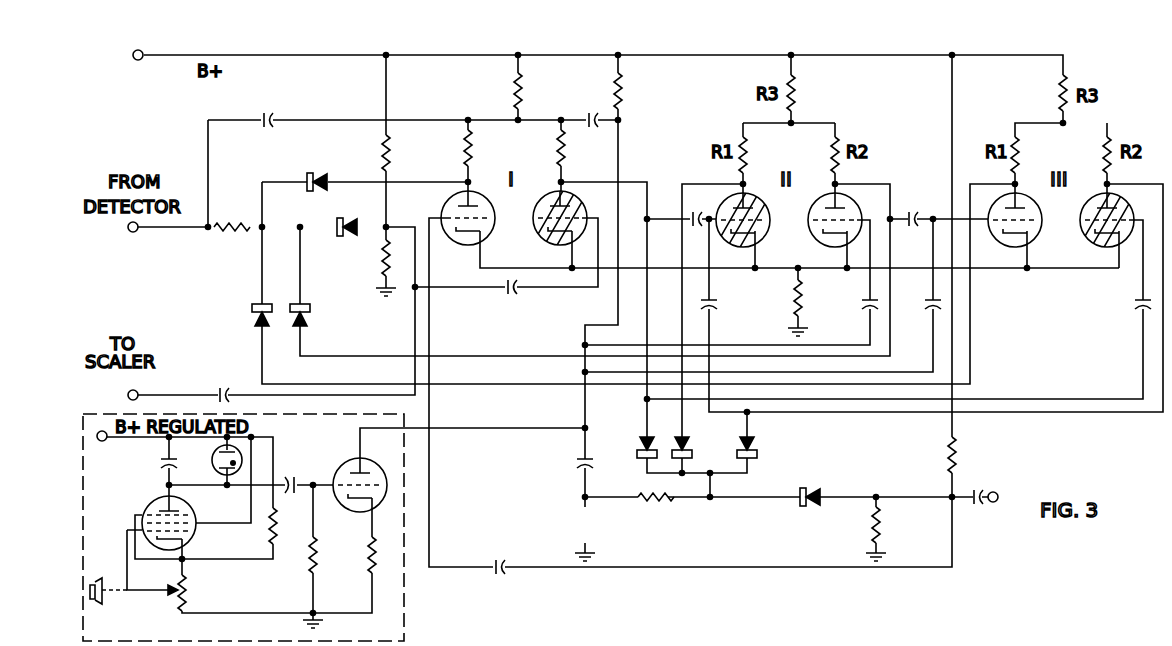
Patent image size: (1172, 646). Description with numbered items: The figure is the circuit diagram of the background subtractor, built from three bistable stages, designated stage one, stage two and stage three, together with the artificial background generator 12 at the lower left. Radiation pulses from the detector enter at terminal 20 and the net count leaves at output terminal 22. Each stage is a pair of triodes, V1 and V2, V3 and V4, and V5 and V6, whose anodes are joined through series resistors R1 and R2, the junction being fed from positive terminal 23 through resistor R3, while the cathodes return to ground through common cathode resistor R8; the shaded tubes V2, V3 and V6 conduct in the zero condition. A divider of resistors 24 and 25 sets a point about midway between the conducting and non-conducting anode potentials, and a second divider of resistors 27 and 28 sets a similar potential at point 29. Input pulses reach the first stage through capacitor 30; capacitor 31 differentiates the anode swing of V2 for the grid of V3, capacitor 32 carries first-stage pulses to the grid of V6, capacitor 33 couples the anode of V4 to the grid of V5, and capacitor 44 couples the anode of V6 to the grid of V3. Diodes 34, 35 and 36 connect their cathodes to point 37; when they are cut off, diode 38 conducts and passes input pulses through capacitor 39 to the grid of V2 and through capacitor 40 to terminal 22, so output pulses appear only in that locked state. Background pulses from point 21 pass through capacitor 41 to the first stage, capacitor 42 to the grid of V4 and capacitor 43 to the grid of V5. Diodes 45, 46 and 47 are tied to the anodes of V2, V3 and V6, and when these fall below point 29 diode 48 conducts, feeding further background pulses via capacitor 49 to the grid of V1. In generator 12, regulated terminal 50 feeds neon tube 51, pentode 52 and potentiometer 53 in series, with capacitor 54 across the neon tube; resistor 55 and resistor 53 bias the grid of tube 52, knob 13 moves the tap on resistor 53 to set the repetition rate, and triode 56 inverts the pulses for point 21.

The artificial background generator 12 is at (404, 611).
The knob 13 is at (100, 600).
The input terminal 20 is at (140, 230).
The background pulse point 21 is at (583, 427).
The output terminal 22 is at (140, 392).
The positive potential terminal 23 is at (142, 62).
The resistor 24 is at (389, 148).
The resistor 25 is at (384, 265).
The resistor 27 is at (950, 452).
The resistor 28 is at (880, 522).
The point 29 is at (950, 495).
The capacitor 30 is at (274, 115).
The capacitor 31 is at (690, 217).
The capacitor 32 is at (1139, 309).
The capacitor 33 is at (910, 217).
The diode 34 is at (324, 173).
The diode 35 is at (308, 309).
The diode 36 is at (252, 309).
The point 37 is at (262, 225).
The diode 38 is at (344, 222).
The capacitor 39 is at (516, 293).
The capacitor 40 is at (219, 392).
The capacitor 41 is at (589, 117).
The capacitor 42 is at (866, 311).
The capacitor 43 is at (929, 311).
The capacitor 44 is at (712, 310).
The diode 45 is at (639, 450).
The diode 46 is at (690, 450).
The diode 47 is at (757, 450).
The diode 48 is at (820, 494).
The capacitor 49 is at (502, 565).
The regulated voltage terminal 50 is at (102, 441).
The neon tube 51 is at (214, 464).
The pentode 52 is at (194, 536).
The potentiometer 53 is at (189, 583).
The capacitor 54 is at (158, 460).
The resistor 55 is at (275, 520).
The triode 56 is at (348, 468).
The triode V1 is at (453, 238).
The triode V2 is at (540, 238).
The triode V3 is at (730, 239).
The triode V4 is at (818, 239).
The triode V5 is at (988, 238).
The triode V6 is at (1083, 238).
The resistor R1 is at (455, 148).
The resistor R2 is at (576, 148).
The resistor R3 is at (511, 93).
The common cathode resistor R8 is at (793, 297).